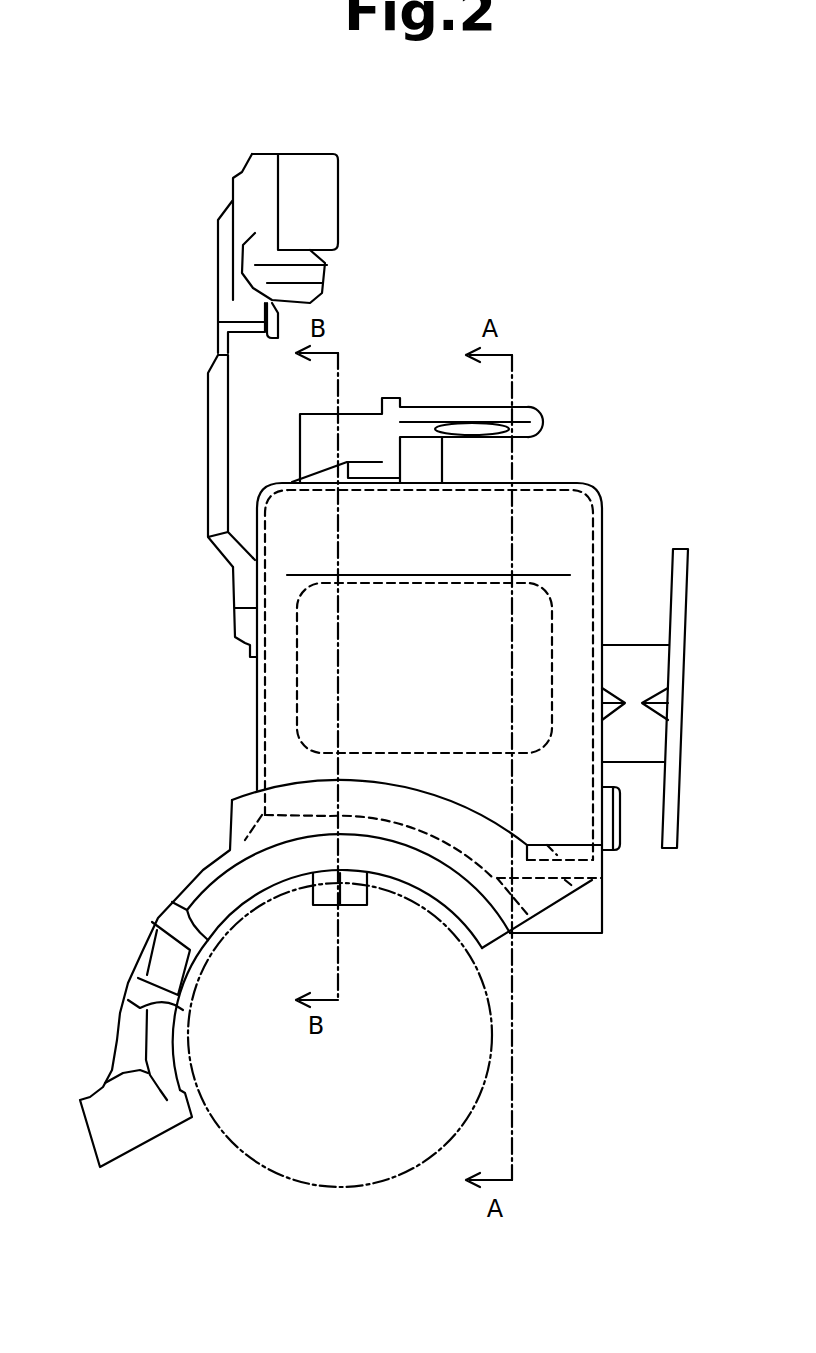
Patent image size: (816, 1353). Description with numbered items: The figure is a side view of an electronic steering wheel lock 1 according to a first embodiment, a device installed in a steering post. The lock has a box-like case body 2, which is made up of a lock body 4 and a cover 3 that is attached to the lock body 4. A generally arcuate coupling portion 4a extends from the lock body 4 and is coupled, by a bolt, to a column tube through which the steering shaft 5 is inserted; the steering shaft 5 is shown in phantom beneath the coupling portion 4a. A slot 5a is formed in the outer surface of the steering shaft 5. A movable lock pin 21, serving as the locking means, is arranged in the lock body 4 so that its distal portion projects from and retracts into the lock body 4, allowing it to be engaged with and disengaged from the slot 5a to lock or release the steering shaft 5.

The electronic steering wheel lock 1 is at (565, 231).
The case body 2 is at (603, 513).
The cover 3 is at (260, 717).
The lock body 4 is at (468, 923).
The coupling portion 4a is at (130, 1033).
The steering shaft 5 is at (320, 1190).
The slot 5a is at (358, 903).
The lock pin 21 is at (322, 903).